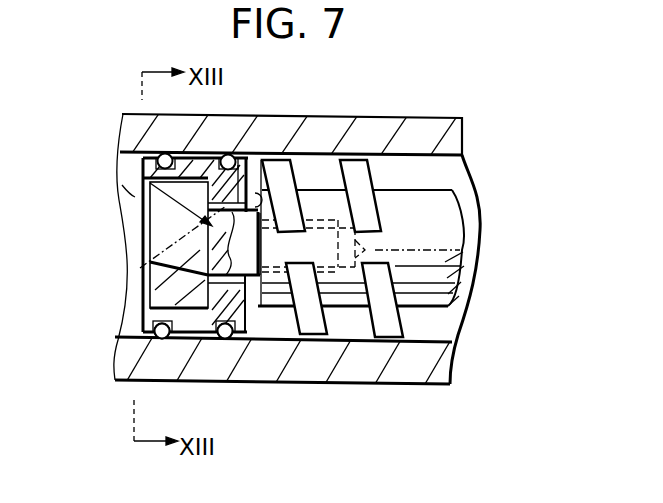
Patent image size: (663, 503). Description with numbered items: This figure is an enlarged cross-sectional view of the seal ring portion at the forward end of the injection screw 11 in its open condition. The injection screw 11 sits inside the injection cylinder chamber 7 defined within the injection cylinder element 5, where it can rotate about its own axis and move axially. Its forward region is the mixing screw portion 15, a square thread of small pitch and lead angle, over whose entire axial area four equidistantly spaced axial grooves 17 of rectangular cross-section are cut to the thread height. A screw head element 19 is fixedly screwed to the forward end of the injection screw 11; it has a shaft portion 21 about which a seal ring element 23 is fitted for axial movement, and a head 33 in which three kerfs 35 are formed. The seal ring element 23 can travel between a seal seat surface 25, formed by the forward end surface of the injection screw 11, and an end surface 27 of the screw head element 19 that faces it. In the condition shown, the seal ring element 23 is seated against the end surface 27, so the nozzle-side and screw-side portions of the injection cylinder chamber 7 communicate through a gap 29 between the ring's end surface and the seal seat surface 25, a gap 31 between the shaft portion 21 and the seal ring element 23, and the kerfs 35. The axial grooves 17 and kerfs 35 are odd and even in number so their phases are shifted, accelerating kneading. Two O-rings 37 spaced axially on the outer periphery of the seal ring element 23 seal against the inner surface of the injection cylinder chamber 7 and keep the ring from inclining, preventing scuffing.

The injection cylinder element 5 is at (333, 357).
The injection cylinder chamber 7 is at (184, 252).
The injection screw 11 is at (444, 216).
The mixing screw portion 15 is at (378, 240).
The axial grooves 17 is at (455, 152).
The screw head element 19 is at (130, 190).
The shaft portion 21 is at (184, 252).
The seal ring element 23 is at (198, 340).
The seal seat surface 25 is at (362, 183).
The end surface 27 is at (247, 300).
The gap 29 is at (296, 172).
The gap 31 is at (212, 200).
The head 33 is at (148, 288).
The kerfs 35 is at (140, 215).
The O-rings 37 is at (162, 340).